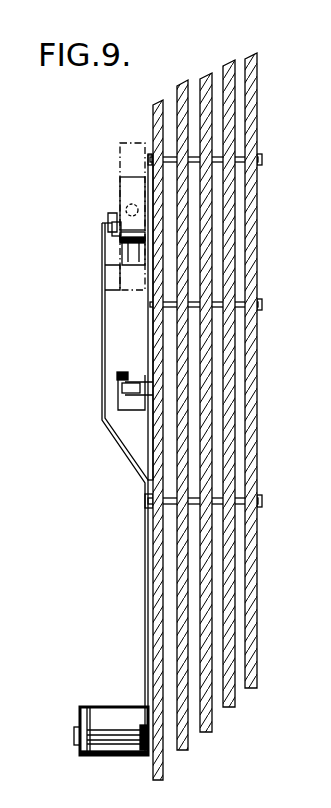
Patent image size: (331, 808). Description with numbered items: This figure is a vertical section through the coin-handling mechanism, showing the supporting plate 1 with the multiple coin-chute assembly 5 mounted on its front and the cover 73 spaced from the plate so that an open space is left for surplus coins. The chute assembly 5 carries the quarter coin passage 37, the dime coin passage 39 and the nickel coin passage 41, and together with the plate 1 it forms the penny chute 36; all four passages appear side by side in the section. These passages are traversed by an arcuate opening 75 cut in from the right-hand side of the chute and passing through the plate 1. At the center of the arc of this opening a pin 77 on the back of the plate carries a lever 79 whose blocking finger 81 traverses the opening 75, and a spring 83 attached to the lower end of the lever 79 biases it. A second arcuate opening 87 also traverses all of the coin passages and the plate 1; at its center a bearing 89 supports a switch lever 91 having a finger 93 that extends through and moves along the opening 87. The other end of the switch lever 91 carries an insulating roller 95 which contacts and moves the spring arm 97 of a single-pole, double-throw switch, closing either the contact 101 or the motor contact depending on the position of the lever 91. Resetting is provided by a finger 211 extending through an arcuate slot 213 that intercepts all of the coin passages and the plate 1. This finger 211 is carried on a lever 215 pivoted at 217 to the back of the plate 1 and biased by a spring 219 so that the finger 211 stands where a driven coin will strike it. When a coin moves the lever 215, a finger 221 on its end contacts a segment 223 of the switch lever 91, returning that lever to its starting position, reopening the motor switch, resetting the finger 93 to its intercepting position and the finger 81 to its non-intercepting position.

The supporting plate 1 is at (147, 578).
The multiple coin-chute assembly 5 is at (150, 122).
The 1¢ chute 36 is at (160, 100).
The 25¢ coin passage 37 is at (196, 85).
The 10¢ coin passage 39 is at (219, 70).
The 5¢ coin passage 41 is at (241, 62).
The cover 73 is at (258, 392).
The arcuate opening 75 is at (153, 141).
The pin 77 is at (118, 398).
The lever 79 is at (150, 352).
The blocking finger 81 is at (258, 161).
The spring 83 is at (116, 376).
The second arcuate opening 87 is at (257, 255).
The bearing 89 is at (122, 180).
The switch lever 91 is at (108, 213).
The finger 93 is at (258, 306).
The insulating roller 95 is at (118, 233).
The spring arm 97 is at (110, 289).
The switch contact 101 is at (118, 158).
The finger 211 is at (258, 506).
The arcuate slot 213 is at (252, 494).
The lever 215 is at (146, 628).
The pivot 217 is at (74, 742).
The spring 219 is at (135, 753).
The finger 221 is at (118, 222).
The segment 223 is at (112, 249).